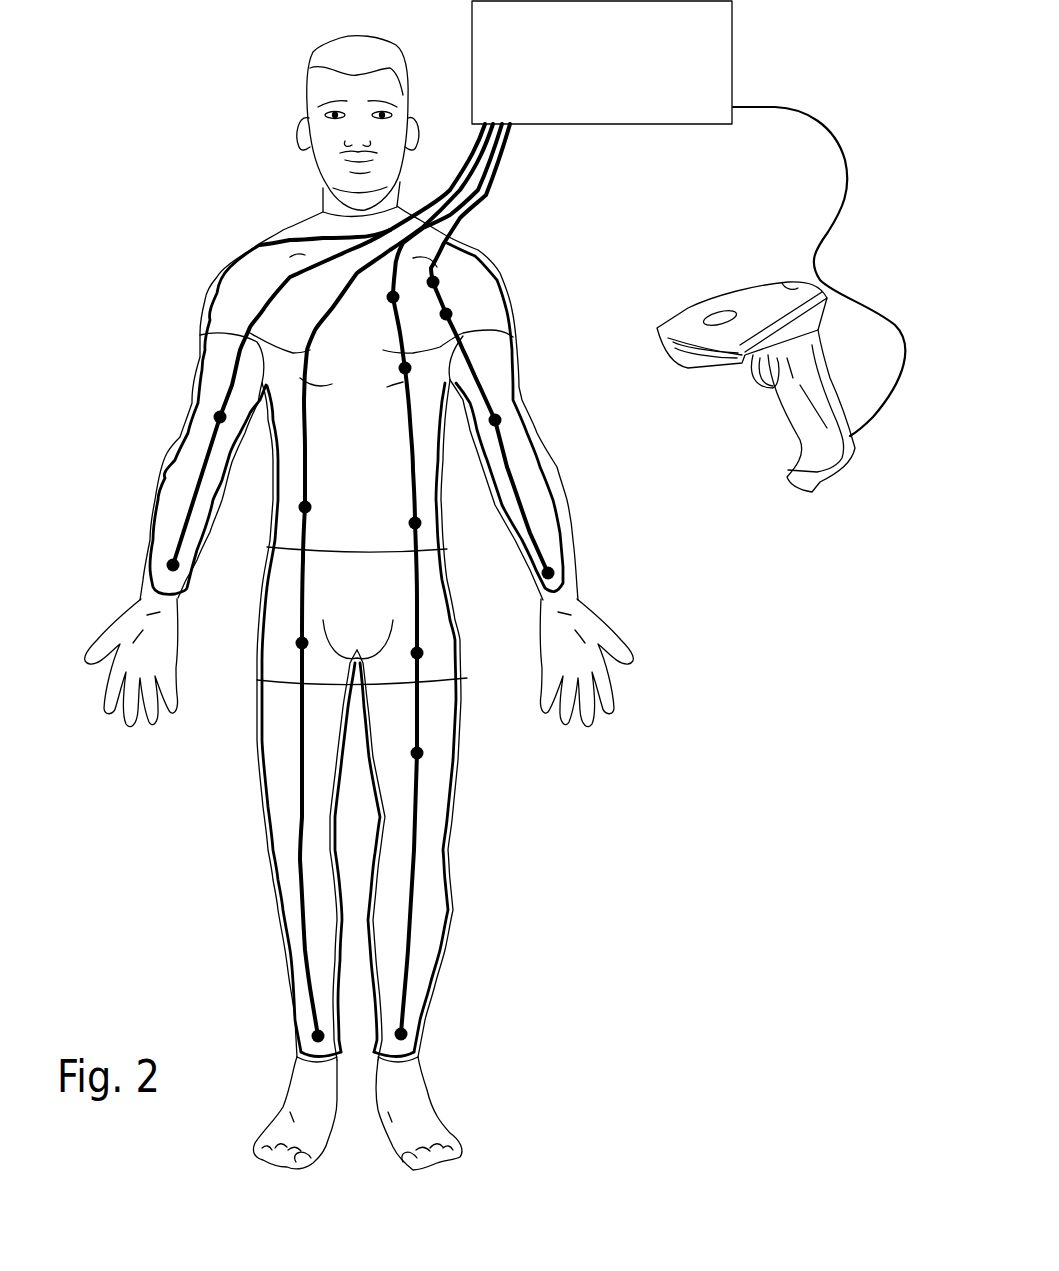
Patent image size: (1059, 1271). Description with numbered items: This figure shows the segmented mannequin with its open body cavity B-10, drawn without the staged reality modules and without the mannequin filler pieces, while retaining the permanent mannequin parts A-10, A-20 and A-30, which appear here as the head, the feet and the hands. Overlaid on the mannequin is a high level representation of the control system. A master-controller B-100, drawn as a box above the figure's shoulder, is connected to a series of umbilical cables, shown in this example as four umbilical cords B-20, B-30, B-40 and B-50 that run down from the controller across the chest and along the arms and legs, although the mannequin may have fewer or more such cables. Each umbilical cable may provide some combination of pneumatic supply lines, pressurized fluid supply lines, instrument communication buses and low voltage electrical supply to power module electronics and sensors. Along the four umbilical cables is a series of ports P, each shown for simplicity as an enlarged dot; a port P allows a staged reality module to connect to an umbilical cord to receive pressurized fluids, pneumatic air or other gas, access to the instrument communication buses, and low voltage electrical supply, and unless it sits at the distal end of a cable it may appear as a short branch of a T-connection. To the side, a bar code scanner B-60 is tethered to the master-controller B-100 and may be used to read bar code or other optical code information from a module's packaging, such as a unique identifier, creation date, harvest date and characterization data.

The permanent mannequin part A-10 is at (310, 82).
The permanent mannequin part A-20 is at (427, 1112).
The permanent mannequin part A-30 is at (590, 620).
The open body cavity B-10 is at (433, 812).
The umbilical cord B-20 is at (263, 293).
The umbilical cord B-30 is at (297, 778).
The umbilical cord B-40 is at (410, 923).
The umbilical cord B-50 is at (442, 300).
The bar code scanner B-60 is at (844, 470).
The master-controller B-100 is at (602, 62).
The port P is at (500, 415).